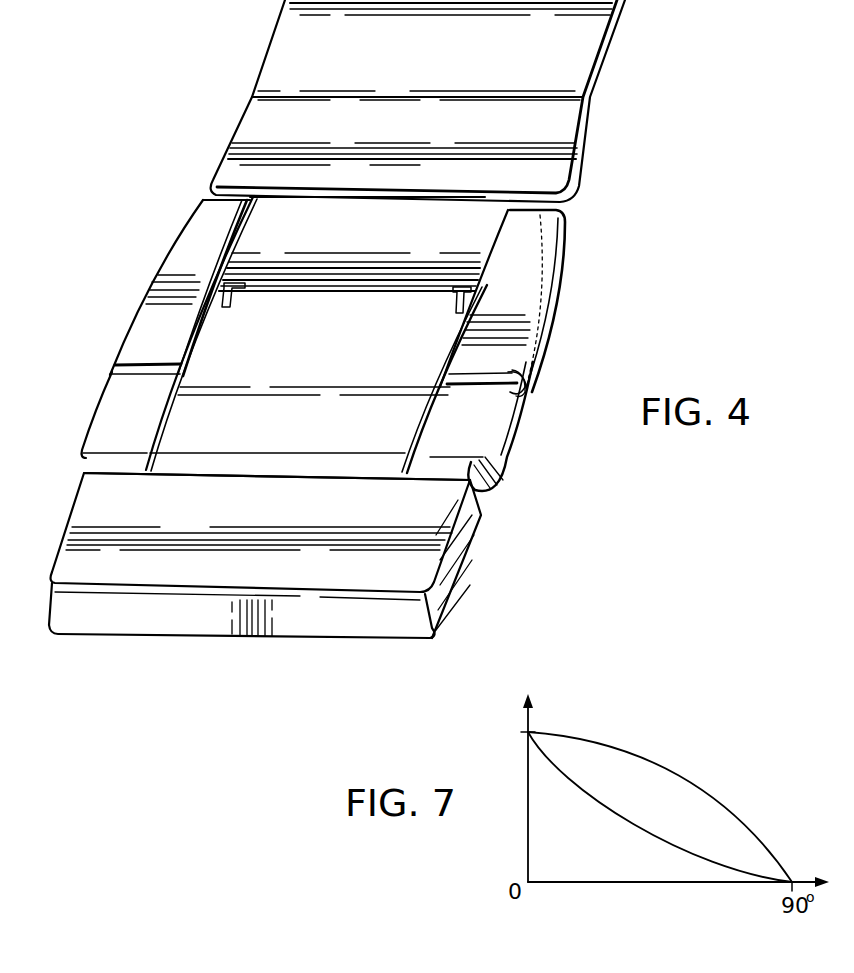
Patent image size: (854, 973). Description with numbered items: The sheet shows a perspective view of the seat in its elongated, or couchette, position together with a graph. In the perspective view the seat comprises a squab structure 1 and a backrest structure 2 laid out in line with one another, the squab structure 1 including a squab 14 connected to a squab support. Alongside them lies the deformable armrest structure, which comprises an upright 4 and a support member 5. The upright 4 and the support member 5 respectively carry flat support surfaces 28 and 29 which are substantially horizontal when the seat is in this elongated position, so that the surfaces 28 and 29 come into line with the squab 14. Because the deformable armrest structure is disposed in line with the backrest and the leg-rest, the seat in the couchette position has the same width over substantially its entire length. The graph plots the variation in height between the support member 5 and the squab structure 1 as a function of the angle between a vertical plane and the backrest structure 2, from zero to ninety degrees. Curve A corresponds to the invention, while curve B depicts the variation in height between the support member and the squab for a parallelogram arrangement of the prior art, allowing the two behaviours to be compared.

In FIG. 4, the squab structure 1 is at (236, 369).
In FIG. 4, the backrest structure 2 is at (237, 162).
In FIG. 4, the upright 4 is at (123, 417).
In FIG. 4, the support member 5 is at (146, 348).
In FIG. 4, the squab 14 is at (386, 438).
In FIG. 4, the flat support surface 28 is at (531, 278).
In FIG. 4, the flat support surface 29 is at (482, 404).
In FIG. 7, the curve A is at (672, 752).
In FIG. 7, the curve B is at (617, 816).